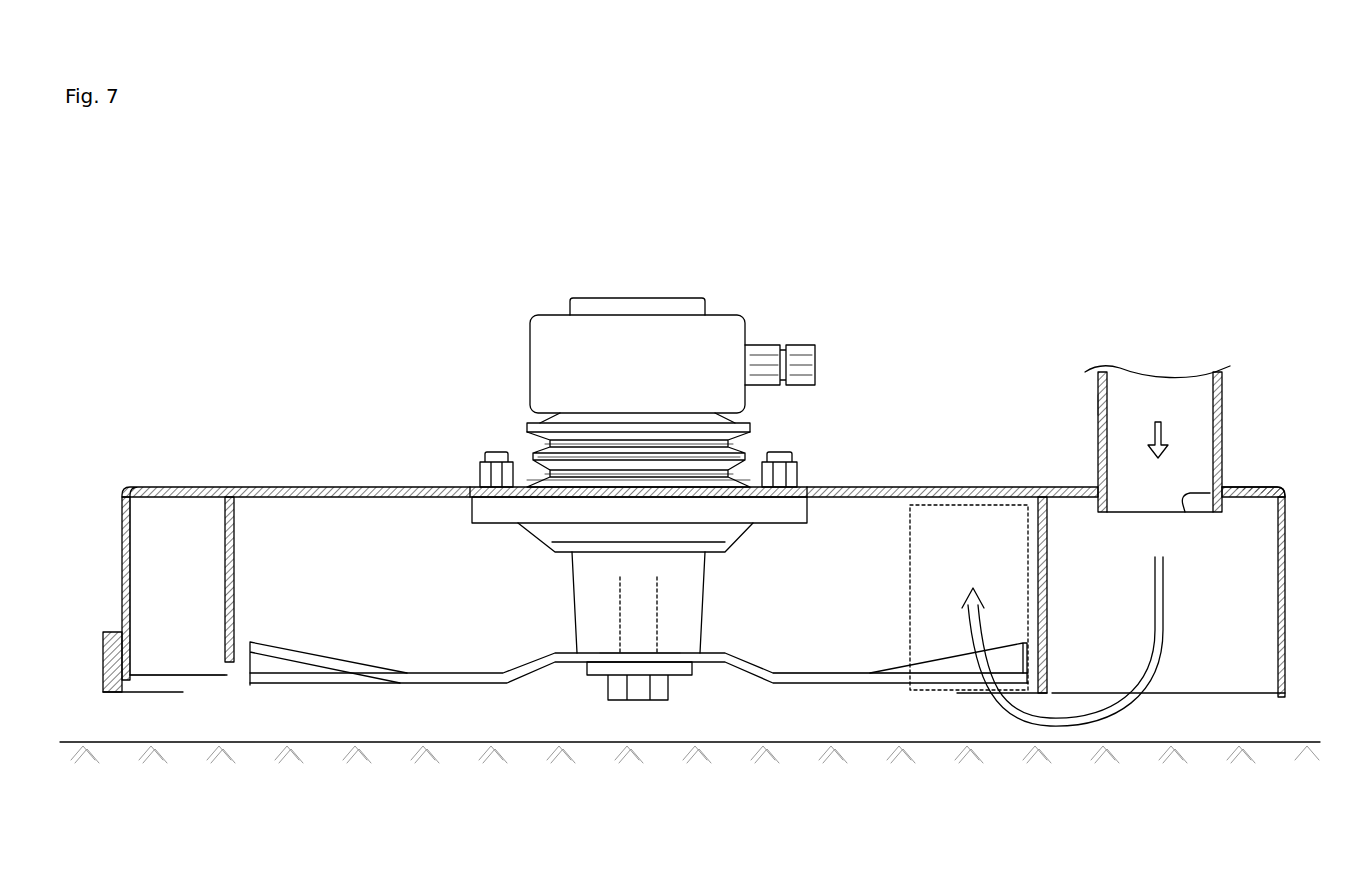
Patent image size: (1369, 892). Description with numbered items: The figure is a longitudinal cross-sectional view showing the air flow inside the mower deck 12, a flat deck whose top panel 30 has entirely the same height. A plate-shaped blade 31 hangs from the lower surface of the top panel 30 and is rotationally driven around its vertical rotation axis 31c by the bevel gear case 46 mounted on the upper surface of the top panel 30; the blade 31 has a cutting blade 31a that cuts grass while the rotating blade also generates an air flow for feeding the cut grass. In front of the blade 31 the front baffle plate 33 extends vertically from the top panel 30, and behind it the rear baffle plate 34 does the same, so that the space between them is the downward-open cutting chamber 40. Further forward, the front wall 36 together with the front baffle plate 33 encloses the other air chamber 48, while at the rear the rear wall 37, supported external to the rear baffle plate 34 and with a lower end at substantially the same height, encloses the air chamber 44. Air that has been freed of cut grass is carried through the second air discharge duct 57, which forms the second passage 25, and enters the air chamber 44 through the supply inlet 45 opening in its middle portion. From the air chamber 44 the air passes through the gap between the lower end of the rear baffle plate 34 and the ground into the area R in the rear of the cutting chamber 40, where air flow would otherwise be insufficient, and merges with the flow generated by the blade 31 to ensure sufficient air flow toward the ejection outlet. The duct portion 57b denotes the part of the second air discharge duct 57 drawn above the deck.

The mower deck 12 is at (270, 396).
The second passage 25 is at (1096, 404).
The top panel 30 is at (878, 487).
The blade 31 is at (445, 672).
The cutting blade 31a is at (852, 672).
The rotation axis 31c is at (615, 602).
The front baffle plate 33 is at (234, 548).
The rear baffle plate 34 is at (1047, 568).
The front wall 36 is at (122, 552).
The rear wall 37 is at (1285, 608).
The cutting chamber 40 is at (378, 524).
The air chamber 44 is at (1068, 538).
The supply inlet 45 is at (1187, 505).
The bevel gear case 46 is at (635, 328).
The other air chamber 48 is at (178, 528).
The second air discharge duct 57 is at (1165, 469).
The duct portion 57b is at (1222, 465).
The area R is at (965, 505).